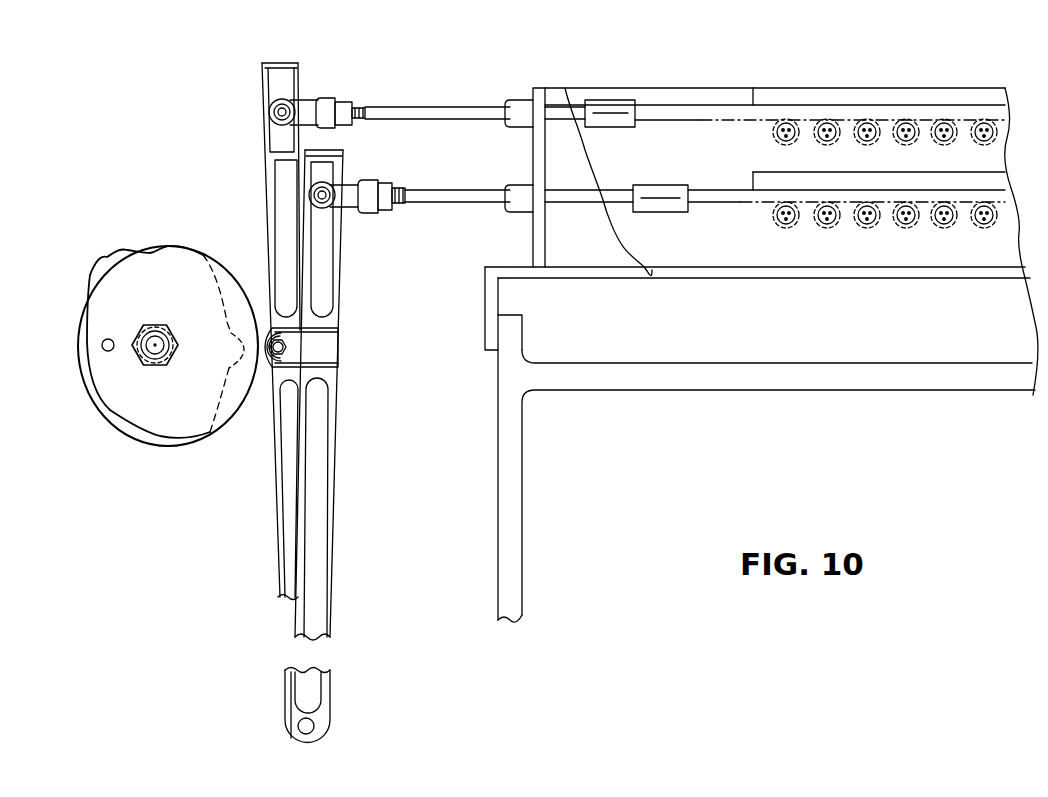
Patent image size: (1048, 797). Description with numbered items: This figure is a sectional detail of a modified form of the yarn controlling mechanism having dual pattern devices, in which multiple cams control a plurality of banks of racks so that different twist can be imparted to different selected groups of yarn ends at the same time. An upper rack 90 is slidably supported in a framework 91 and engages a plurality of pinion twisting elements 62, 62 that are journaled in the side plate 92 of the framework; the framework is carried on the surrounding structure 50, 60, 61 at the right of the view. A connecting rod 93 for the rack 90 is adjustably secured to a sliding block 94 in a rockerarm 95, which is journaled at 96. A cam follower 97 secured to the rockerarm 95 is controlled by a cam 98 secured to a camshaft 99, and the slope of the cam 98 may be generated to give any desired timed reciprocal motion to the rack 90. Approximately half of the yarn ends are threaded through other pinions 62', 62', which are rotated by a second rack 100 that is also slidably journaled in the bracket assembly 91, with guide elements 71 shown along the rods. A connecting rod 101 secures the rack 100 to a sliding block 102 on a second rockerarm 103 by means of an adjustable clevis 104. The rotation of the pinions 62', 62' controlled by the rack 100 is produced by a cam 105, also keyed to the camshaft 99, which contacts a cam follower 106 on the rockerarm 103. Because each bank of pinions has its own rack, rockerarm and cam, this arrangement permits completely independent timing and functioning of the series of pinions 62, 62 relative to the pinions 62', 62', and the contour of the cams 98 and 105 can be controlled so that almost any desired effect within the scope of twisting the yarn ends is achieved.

The frame member 50 is at (618, 389).
The horizontal beam 60 is at (652, 270).
The mounting bracket 61 is at (485, 323).
The pinion twisting elements 62 is at (867, 143).
The other pinions 62' is at (882, 230).
The guide sleeve 71 is at (597, 100).
The upper rack 90 is at (688, 102).
The framework 91 is at (532, 236).
The side plate 92 is at (626, 250).
The connecting rod 93 is at (425, 112).
The sliding block 94 is at (293, 87).
The rockerarm 95 is at (277, 196).
The journal 96 is at (314, 726).
The cam follower 97 is at (252, 392).
The cam 98 is at (128, 252).
The camshaft 99 is at (148, 353).
The rack 100 is at (711, 193).
The connecting rod 101 is at (433, 197).
The sliding block 102 is at (325, 230).
The rockerarm 103 is at (333, 430).
The adjustable clevis 104 is at (330, 102).
The cam 105 is at (98, 362).
The cam follower 106 is at (270, 330).